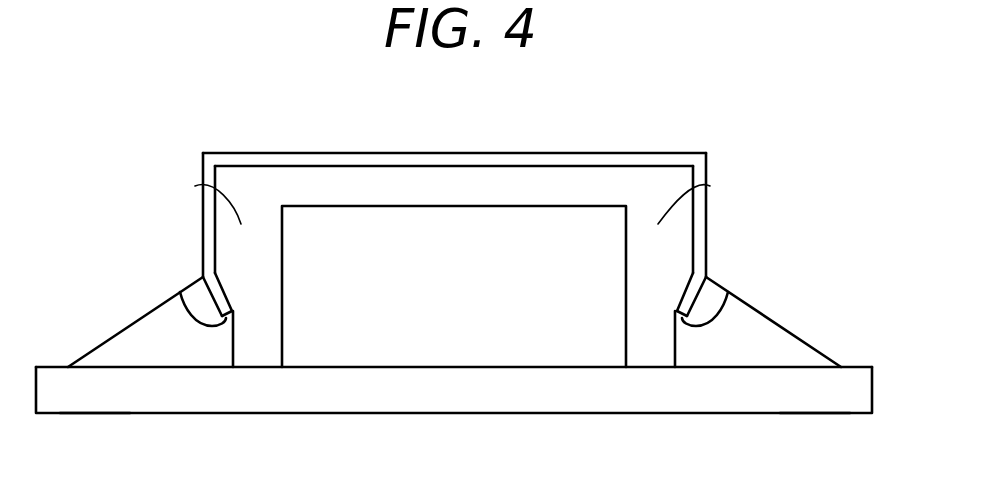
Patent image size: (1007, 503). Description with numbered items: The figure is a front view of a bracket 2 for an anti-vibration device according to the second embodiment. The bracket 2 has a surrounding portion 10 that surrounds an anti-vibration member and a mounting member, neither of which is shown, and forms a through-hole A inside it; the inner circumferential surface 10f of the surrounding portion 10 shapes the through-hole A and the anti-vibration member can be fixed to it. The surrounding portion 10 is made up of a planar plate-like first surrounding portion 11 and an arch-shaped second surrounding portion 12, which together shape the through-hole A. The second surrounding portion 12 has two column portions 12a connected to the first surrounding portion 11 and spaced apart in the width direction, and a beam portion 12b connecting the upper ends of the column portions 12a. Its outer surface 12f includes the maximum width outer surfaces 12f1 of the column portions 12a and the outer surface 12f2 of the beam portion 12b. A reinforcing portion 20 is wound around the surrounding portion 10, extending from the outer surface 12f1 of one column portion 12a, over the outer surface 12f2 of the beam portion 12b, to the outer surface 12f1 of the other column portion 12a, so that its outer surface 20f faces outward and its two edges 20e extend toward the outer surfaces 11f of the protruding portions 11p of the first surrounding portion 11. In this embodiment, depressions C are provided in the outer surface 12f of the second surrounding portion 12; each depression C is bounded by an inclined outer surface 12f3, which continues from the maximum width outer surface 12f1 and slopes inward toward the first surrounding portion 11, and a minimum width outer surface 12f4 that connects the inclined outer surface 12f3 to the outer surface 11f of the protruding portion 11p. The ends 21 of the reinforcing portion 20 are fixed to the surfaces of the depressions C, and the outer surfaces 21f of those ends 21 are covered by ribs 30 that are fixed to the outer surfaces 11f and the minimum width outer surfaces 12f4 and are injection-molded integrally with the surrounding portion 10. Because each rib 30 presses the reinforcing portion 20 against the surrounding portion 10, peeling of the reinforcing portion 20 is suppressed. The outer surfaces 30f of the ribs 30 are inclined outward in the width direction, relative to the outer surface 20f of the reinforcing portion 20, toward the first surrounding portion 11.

The bracket for an anti-vibration device 2 is at (187, 106).
The surrounding portion 10 is at (501, 415).
The inner circumferential surface 10f is at (282, 242).
The first surrounding portion 11 is at (415, 389).
The outer surface of the protruding portion 11f is at (103, 367).
The protruding portion 11p is at (90, 393).
The second surrounding portion 12 is at (400, 184).
The column portion 12a is at (195, 186).
The beam portion 12b is at (468, 182).
The outer surface of the second surrounding portion 12f is at (448, 271).
The maximum width outer surface 12f1 is at (215, 222).
The outer surface of the beam portion 12f2 is at (604, 166).
The inclined outer surface 12f3 is at (220, 284).
The minimum width outer surface 12f4 is at (233, 353).
The reinforcing portion 20 is at (510, 150).
The edge of the reinforcing portion 20e is at (183, 294).
The outer surface of the reinforcing portion 20f is at (203, 168).
The end of the reinforcing portion 21 is at (226, 302).
The outer surface of the end 21f is at (201, 290).
The rib 30 is at (129, 322).
The outer surface of the rib 30f is at (110, 338).
The through-hole A is at (469, 319).
The depression C is at (222, 341).